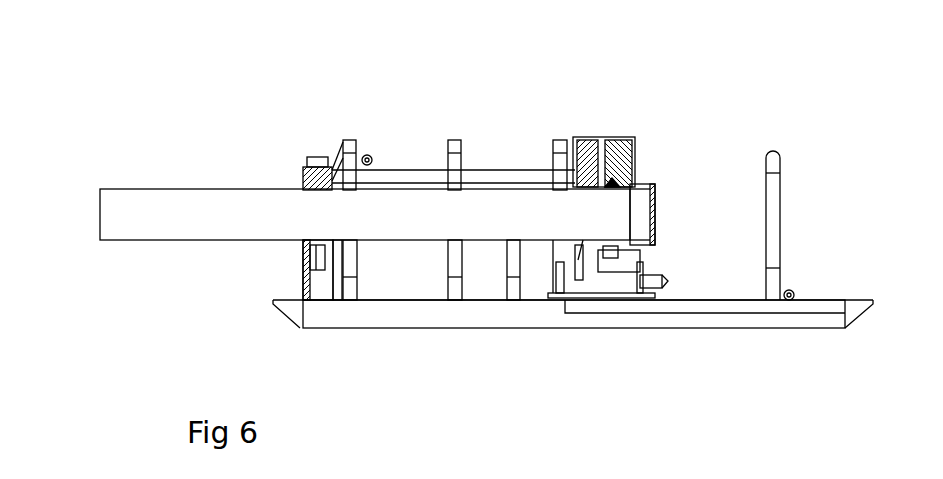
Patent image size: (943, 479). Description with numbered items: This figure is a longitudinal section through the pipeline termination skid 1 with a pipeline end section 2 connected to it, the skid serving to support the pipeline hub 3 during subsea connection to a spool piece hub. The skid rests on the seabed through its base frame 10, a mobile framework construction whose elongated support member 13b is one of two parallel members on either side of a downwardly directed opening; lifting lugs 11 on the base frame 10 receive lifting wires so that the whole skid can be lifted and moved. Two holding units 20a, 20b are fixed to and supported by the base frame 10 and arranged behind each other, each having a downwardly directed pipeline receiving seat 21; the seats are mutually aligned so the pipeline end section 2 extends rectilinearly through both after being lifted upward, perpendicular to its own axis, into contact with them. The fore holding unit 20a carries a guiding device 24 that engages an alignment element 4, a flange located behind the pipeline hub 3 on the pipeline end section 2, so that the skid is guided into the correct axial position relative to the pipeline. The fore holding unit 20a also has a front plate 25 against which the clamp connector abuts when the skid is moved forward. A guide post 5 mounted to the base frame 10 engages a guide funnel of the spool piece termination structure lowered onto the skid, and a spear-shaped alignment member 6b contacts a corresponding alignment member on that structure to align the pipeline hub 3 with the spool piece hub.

The pipeline termination skid 1 is at (611, 97).
The pipeline end section 2 is at (212, 189).
The pipeline hub 3 is at (648, 252).
The alignment element 4 is at (617, 186).
The guide post 5 is at (777, 185).
The alignment member 6b is at (652, 282).
The base frame 10 is at (437, 339).
The lifting lug 11 is at (373, 162).
The support member 13b is at (535, 322).
The holding unit 20a is at (590, 137).
The holding unit 20b is at (325, 170).
The pipeline receiving seat 21 is at (317, 189).
The guiding device 24 is at (585, 248).
The front plate 25 is at (634, 157).